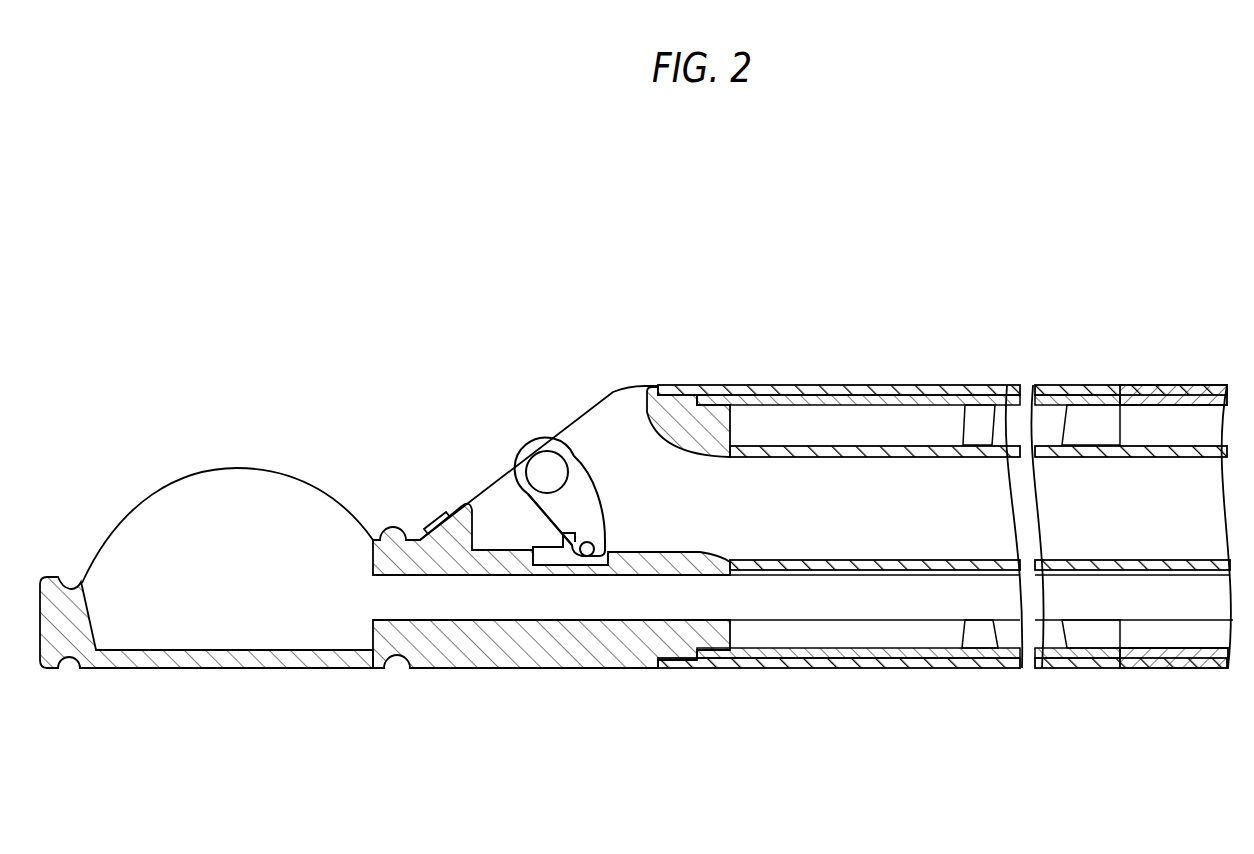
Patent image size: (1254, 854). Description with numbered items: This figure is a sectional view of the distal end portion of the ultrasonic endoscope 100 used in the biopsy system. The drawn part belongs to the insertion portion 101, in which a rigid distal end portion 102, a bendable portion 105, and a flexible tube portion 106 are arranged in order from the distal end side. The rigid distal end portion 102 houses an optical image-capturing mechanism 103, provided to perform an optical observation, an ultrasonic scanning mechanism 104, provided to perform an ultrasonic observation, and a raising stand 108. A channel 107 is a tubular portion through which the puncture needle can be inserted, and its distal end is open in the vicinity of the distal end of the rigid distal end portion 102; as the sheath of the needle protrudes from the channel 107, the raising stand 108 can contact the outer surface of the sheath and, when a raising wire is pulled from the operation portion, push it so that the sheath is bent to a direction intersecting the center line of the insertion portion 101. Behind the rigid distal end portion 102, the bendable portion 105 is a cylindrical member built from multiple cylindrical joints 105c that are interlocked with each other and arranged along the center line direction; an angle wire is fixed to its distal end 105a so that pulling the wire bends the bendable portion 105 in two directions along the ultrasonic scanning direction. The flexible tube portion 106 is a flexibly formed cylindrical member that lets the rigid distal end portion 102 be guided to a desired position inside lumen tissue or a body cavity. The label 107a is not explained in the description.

The ultrasonic endoscope 100 is at (277, 260).
The insertion portion 101 is at (1185, 252).
The rigid distal end portion 102 is at (622, 413).
The optical image-capturing mechanism 103 is at (440, 522).
The ultrasonic scanning mechanism 104 is at (125, 498).
The bendable portion 105 is at (790, 385).
The distal end of the bendable portion 105a is at (868, 637).
The cylindrical joints 105c is at (902, 420).
The flexible tube portion 106 is at (1153, 388).
The channel 107 is at (828, 445).
The raising lever 107a is at (595, 435).
The raising stand 108 is at (547, 500).